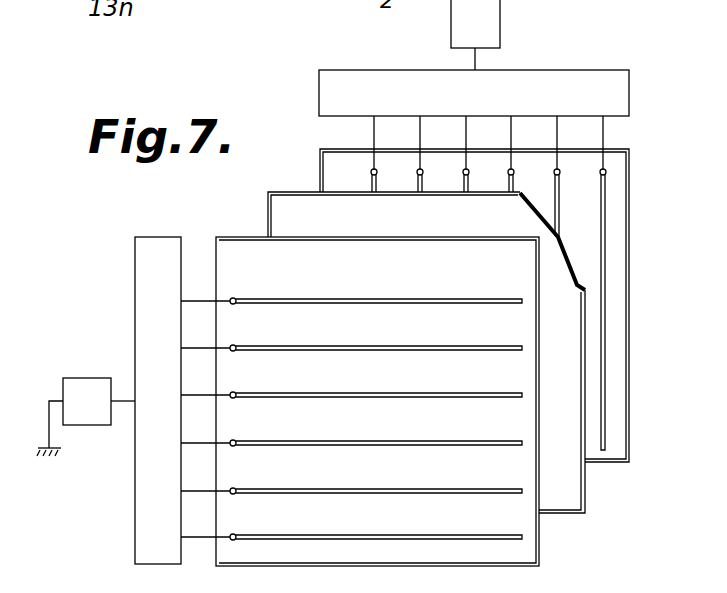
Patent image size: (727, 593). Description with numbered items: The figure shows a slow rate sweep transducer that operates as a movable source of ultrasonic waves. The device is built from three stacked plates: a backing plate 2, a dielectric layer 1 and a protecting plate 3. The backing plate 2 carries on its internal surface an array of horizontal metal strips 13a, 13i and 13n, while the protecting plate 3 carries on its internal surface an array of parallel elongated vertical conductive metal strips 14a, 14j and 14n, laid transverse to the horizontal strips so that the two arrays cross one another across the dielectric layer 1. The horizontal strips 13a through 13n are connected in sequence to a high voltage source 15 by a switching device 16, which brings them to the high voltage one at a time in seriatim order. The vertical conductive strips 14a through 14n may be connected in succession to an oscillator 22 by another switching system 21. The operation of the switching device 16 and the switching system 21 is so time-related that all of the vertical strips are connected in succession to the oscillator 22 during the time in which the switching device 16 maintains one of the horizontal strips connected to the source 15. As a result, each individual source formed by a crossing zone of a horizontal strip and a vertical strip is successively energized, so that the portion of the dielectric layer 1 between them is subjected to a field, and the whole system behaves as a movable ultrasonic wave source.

The dielectric layer 1 is at (568, 498).
The backing plate 2 is at (525, 550).
The protecting plate 3 is at (613, 452).
The horizontal strip 13a is at (248, 300).
The horizontal strip 13i is at (268, 445).
The horizontal strip 13n is at (247, 537).
The vertical conductive strip 14a is at (372, 182).
The vertical conductive strip 14j is at (512, 190).
The vertical conductive strip 14n is at (602, 198).
The high voltage source 15 is at (98, 414).
The switching device 16 is at (167, 414).
The switching system 21 is at (486, 104).
The oscillator 22 is at (486, 34).